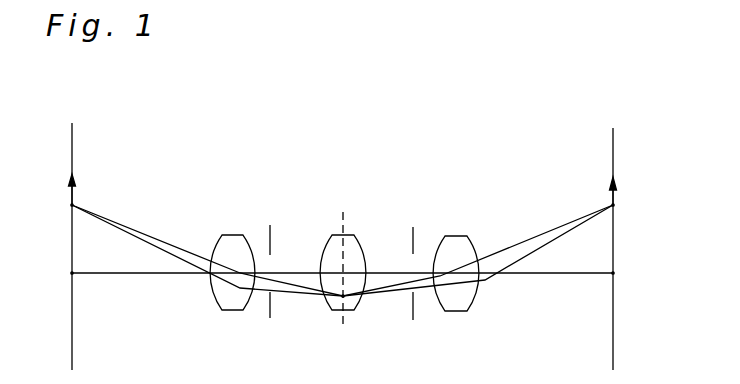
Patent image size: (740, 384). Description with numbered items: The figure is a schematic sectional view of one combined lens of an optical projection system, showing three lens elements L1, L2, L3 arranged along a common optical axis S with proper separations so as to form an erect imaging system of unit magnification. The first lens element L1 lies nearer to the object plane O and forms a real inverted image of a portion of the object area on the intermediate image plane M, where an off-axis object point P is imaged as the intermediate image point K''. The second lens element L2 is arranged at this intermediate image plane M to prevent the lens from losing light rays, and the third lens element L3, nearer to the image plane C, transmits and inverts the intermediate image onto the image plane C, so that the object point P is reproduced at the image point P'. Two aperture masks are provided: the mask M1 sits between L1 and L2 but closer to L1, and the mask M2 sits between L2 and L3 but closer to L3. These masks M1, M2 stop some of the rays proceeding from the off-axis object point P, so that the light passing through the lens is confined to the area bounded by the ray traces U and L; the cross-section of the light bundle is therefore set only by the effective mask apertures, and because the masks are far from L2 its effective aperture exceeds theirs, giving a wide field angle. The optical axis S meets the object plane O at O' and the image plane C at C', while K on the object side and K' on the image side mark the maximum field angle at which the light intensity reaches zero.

The object plane O is at (99, 230).
The maximum field angle on object side K is at (98, 169).
The off-axis object point P is at (60, 198).
The intersection of optical axis and object plane O' is at (58, 274).
The upper ray trace U is at (133, 230).
The lower ray trace L is at (137, 229).
The optical axis S is at (135, 273).
The first lens element L1 is at (233, 243).
The second lens element L2 is at (352, 243).
The third lens element L3 is at (462, 247).
The first aperture mask M1 is at (273, 232).
The second aperture mask M2 is at (415, 238).
The intermediate image plane M is at (343, 322).
The intermediate image point K'' is at (311, 328).
The image plane C is at (582, 235).
The maximum field angle K' is at (642, 172).
The image point P' is at (626, 204).
The intersection of optical axis and image plane C' is at (627, 278).